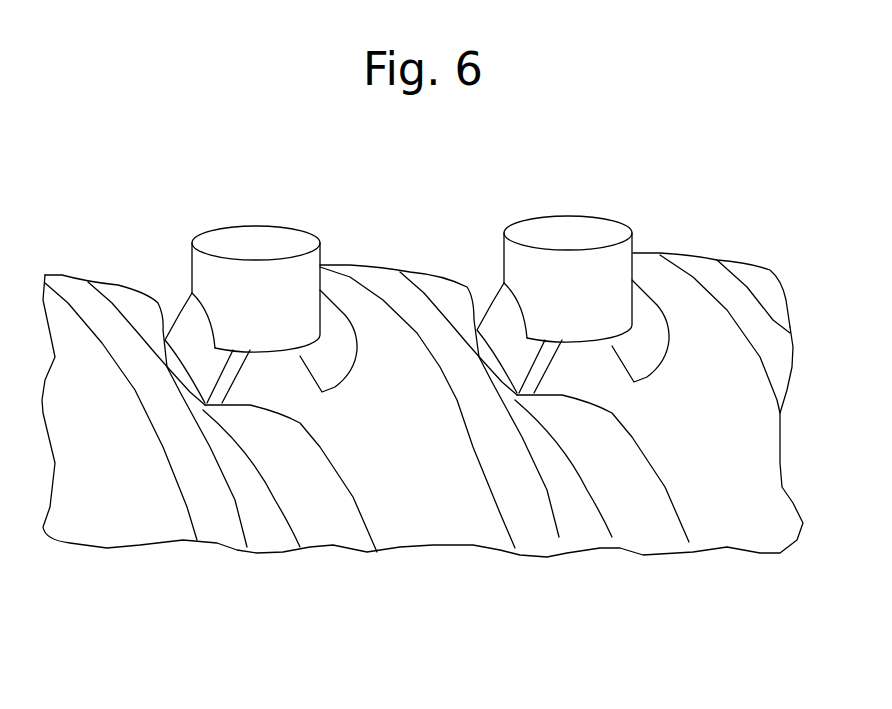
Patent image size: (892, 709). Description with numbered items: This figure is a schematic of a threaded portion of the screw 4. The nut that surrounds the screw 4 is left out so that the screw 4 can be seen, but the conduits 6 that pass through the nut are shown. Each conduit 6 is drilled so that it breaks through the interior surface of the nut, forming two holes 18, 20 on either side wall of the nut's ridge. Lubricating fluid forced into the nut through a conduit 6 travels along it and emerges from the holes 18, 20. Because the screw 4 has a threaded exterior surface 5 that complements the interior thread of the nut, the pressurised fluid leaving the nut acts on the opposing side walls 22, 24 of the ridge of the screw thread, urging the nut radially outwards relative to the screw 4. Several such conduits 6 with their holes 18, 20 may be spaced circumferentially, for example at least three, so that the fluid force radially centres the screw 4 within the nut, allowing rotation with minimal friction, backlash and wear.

The screw 4 is at (712, 225).
The threaded exterior surface 5 is at (306, 364).
The conduit 6 is at (258, 240).
The hole 18 is at (188, 318).
The hole 20 is at (338, 326).
The side wall of the ridge of the screw thread 22 is at (305, 547).
The side wall of the ridge of the screw thread 24 is at (393, 413).